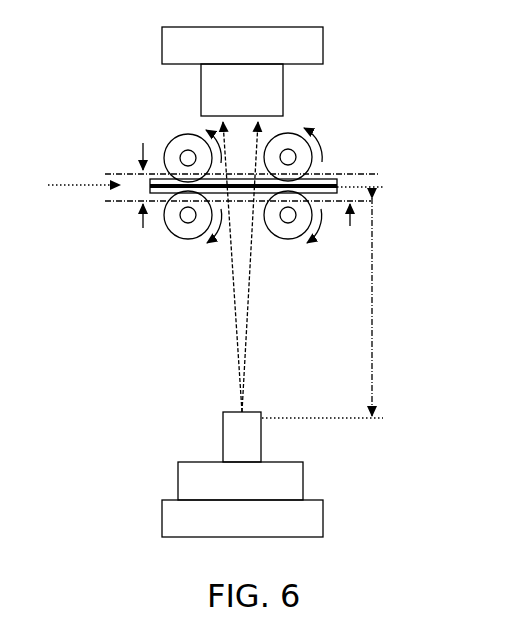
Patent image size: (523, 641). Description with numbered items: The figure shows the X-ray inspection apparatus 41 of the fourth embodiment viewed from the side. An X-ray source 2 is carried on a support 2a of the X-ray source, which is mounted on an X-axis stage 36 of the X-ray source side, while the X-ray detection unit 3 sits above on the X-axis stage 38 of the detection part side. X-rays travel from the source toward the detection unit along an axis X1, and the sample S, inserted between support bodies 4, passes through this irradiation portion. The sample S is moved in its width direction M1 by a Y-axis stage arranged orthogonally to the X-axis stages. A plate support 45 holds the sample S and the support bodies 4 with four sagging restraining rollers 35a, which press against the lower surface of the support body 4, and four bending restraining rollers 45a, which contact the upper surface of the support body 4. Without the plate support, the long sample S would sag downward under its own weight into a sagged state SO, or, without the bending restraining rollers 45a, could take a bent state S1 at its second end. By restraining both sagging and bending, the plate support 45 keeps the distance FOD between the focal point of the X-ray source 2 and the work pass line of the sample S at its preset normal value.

The X-axis stage of the detection part side 38 is at (323, 48).
The X-ray detection unit 3 is at (283, 90).
The optical axis X1 is at (254, 323).
The bending restraining roller 45a is at (190, 134).
The sagging restraining roller 35a is at (178, 240).
The sample S is at (170, 180).
The bent state S1 is at (129, 172).
The sagged state SO is at (131, 203).
The width direction M1 is at (50, 176).
The plate support 45 is at (148, 263).
The support body 4 is at (330, 171).
The X-ray inspection apparatus 41 is at (460, 158).
The distance between focal point of X-ray source and work pass line FOD is at (339, 302).
The X-ray source 2 is at (223, 432).
The support of the X-ray source 2a is at (303, 478).
The X-axis stage of the X-ray source side 36 is at (323, 512).